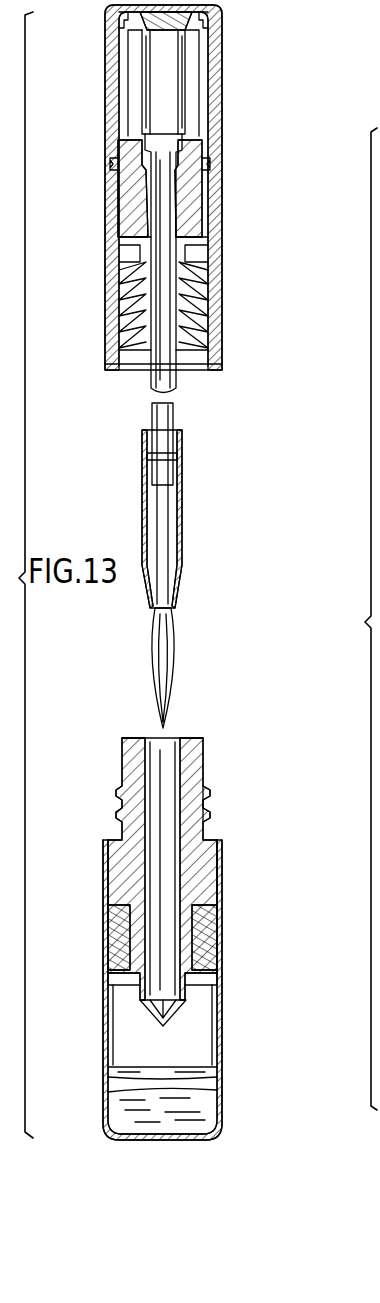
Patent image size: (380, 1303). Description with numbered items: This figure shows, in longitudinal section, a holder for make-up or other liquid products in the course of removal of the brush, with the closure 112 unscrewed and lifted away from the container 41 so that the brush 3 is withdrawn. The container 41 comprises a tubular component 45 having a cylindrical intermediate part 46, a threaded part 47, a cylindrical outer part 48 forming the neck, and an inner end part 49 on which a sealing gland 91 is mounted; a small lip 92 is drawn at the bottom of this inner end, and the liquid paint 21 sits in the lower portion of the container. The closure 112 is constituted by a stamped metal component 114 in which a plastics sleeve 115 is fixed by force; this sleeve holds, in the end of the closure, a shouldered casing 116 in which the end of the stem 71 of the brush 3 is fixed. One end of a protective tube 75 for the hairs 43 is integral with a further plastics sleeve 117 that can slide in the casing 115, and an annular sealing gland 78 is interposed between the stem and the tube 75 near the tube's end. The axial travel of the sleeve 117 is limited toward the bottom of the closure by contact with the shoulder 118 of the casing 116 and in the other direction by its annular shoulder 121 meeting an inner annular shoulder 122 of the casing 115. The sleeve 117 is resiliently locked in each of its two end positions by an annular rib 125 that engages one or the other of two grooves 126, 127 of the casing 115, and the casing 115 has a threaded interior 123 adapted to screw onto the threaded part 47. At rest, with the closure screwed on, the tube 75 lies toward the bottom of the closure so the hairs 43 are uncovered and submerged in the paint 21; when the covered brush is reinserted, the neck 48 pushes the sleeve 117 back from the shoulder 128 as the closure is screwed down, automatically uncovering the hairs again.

The brush 3 is at (184, 621).
The liquid paint 21 is at (108, 1098).
The container 41 is at (106, 1030).
The hairs 43 is at (166, 672).
The tubular component 45 is at (218, 832).
The cylindrical intermediate part 46 is at (218, 858).
The threaded part 47 is at (124, 790).
The cylindrical outer part 48 is at (124, 745).
The inner end part 49 is at (196, 934).
The stem 71 is at (172, 408).
The protective tube 75 is at (180, 510).
The annular sealing gland 78 is at (166, 458).
The sealing gland 91 is at (206, 982).
The cone tip 92 is at (180, 1012).
The closure 112 is at (95, 263).
The stamped metal component 114 is at (215, 126).
The sleeve 115 is at (118, 120).
The shouldered casing 116 is at (176, 90).
The sleeve 117 is at (120, 148).
The shoulder 118 is at (202, 40).
The annular shoulder 121 is at (210, 171).
The inner annular shoulder 122 is at (204, 276).
The threaded interior 123 is at (206, 324).
The annular rib 125 is at (206, 18).
The groove 126 is at (112, 10).
The groove 127 is at (110, 164).
The shoulder 128 is at (206, 250).